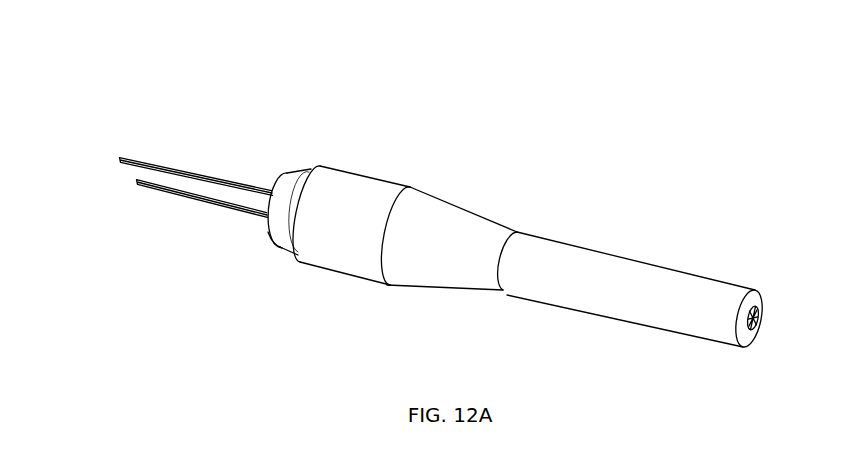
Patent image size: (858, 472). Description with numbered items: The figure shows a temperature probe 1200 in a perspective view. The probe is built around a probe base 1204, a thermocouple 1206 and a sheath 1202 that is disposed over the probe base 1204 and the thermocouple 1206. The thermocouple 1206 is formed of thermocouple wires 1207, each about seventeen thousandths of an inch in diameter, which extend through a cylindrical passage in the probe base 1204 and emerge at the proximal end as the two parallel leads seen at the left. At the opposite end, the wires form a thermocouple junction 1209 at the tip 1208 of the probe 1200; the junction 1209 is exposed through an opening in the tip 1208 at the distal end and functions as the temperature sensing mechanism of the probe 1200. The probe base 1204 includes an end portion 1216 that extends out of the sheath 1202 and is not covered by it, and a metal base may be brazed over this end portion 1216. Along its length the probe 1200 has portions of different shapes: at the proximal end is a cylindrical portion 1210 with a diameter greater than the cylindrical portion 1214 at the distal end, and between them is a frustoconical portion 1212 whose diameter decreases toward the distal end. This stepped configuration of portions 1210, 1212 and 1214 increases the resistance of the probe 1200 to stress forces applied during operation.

The temperature probe 1200 is at (181, 62).
The sheath 1202 is at (447, 213).
The probe base 1204 is at (295, 185).
The thermocouple 1206 is at (128, 158).
The thermocouple wires 1207 is at (163, 182).
The tip 1208 is at (752, 343).
The thermocouple junction 1209 is at (762, 312).
The cylindrical portion 1210 is at (277, 278).
The frustoconical portion 1212 is at (380, 295).
The cylindrical portion 1214 is at (505, 298).
The end portion 1216 is at (262, 238).